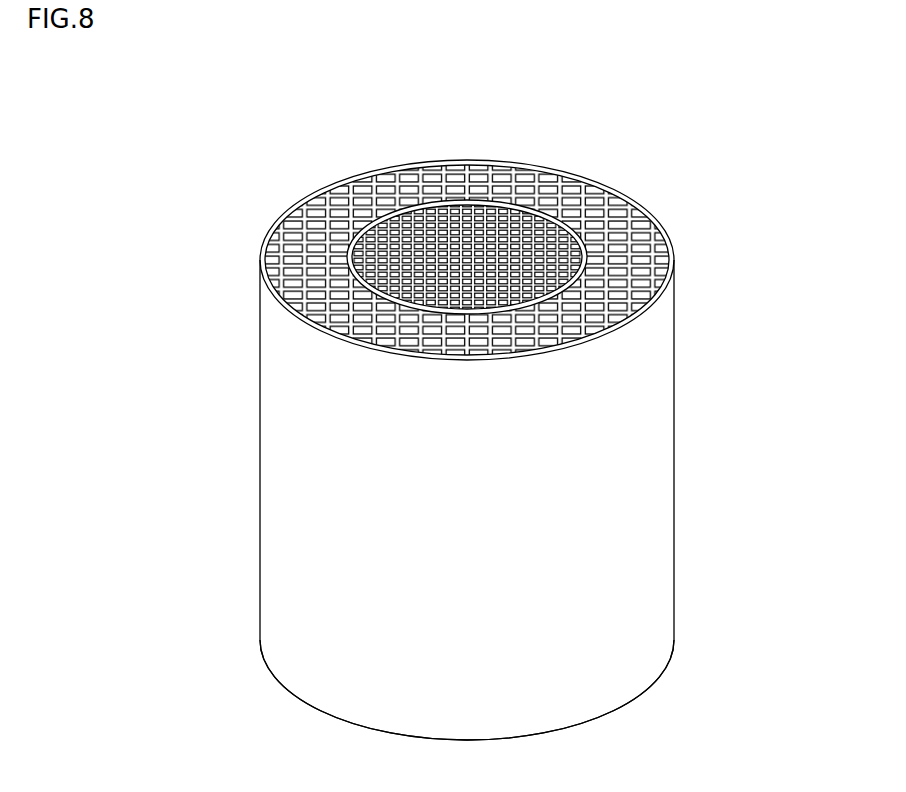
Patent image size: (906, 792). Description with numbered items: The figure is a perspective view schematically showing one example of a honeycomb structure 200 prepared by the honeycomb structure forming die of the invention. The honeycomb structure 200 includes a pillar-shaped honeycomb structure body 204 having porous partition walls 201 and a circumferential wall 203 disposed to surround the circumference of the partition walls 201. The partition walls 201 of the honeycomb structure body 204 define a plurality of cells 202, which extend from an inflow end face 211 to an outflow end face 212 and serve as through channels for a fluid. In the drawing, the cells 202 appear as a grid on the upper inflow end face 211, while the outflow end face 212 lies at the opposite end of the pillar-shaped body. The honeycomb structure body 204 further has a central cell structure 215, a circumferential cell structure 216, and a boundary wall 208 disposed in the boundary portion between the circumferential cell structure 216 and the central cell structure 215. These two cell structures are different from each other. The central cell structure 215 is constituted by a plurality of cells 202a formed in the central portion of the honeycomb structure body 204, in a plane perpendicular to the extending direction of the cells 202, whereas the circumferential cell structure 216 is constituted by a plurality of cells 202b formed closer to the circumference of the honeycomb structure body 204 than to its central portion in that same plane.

The honeycomb structure 200 is at (785, 67).
The partition walls 201 is at (515, 185).
The cells 202 is at (490, 212).
The cells of the central cell structure 202a is at (547, 238).
The cells of the circumferential cell structure 202b is at (432, 185).
The circumferential wall 203 is at (648, 332).
The honeycomb structure body 204 is at (680, 445).
The boundary wall 208 is at (590, 258).
The inflow end face 211 is at (305, 183).
The outflow end face 212 is at (275, 683).
The central cell structure 215 is at (365, 236).
The circumferential cell structure 216 is at (332, 268).